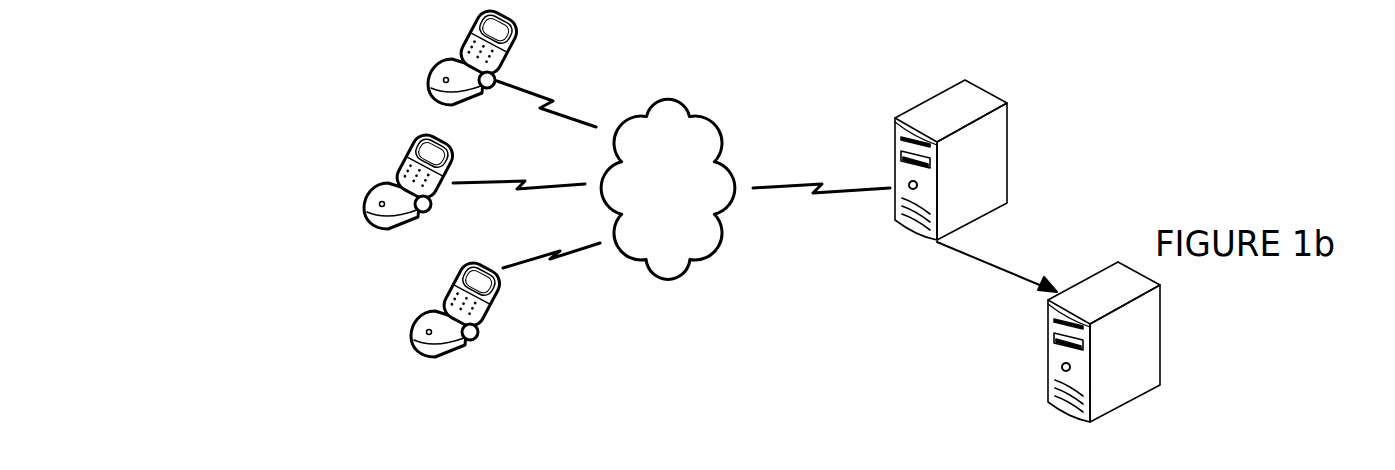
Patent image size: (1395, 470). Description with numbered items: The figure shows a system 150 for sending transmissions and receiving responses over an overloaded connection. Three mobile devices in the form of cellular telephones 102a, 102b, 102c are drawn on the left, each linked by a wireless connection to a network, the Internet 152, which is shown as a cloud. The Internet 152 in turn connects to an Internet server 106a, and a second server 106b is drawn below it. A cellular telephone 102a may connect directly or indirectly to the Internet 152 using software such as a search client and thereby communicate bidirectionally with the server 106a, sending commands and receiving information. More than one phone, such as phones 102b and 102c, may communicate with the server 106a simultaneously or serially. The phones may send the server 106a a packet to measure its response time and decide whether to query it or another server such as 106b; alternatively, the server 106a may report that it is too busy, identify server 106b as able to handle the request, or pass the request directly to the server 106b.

The cellular telephone 102a is at (388, 182).
The cellular telephone 102b is at (430, 77).
The cellular telephone 102c is at (440, 310).
The Internet 152 is at (667, 88).
The Internet server 106a is at (892, 160).
The server 106b is at (1045, 380).
The system 150 is at (1052, 97).